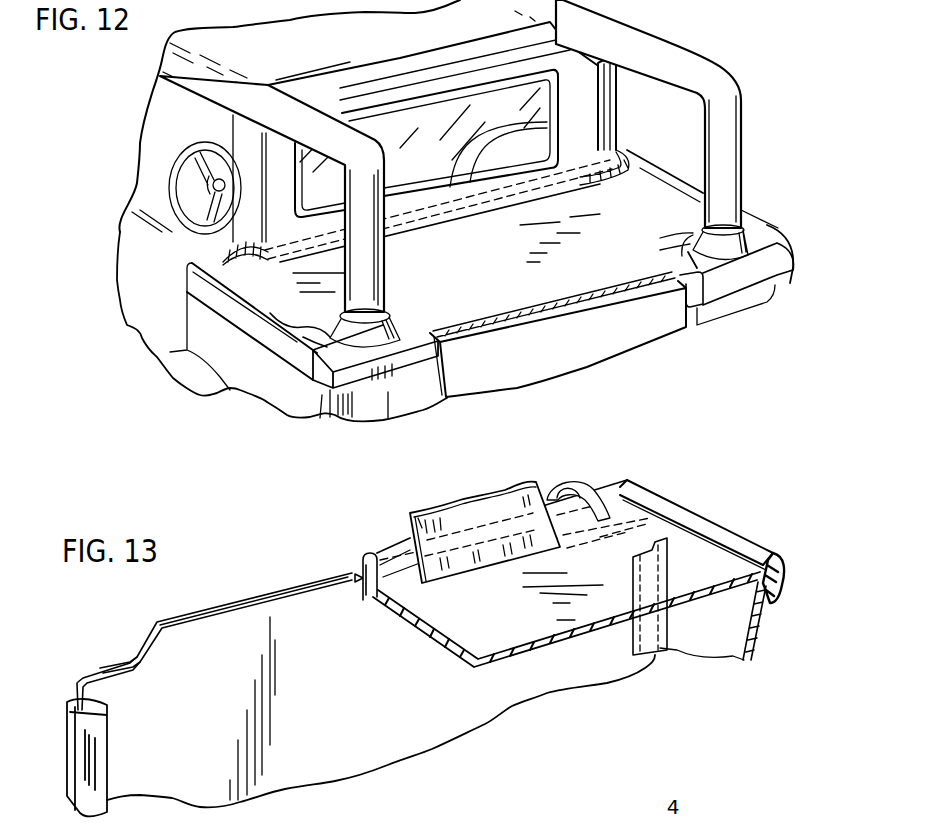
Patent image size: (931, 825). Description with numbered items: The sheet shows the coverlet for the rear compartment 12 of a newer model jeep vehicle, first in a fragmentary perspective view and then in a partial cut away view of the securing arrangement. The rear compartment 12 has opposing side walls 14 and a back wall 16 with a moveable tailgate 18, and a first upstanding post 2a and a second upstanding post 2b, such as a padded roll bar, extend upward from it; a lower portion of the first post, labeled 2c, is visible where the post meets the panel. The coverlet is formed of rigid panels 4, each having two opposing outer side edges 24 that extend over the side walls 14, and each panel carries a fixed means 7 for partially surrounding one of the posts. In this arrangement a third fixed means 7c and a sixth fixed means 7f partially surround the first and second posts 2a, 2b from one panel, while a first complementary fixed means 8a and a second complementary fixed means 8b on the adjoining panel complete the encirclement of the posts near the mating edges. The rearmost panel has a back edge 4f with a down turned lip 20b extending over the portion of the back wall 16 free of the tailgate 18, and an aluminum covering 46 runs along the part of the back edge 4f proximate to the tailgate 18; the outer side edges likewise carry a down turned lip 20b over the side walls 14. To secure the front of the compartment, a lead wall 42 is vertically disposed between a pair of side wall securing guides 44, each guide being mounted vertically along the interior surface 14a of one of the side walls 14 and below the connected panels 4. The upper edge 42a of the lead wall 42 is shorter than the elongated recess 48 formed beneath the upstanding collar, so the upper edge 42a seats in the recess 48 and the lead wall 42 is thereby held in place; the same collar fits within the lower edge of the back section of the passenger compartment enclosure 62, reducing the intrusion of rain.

In FIG. 12, the first upstanding post 2a is at (392, 266).
In FIG. 12, the second upstanding post 2b is at (744, 152).
In FIG. 12, the roll bar lower leg 2c is at (327, 396).
In FIG. 12, the rigid panels 4 is at (652, 183).
In FIG. 13, the rigid panels 4 is at (695, 555).
In FIG. 12, the back edge 4f is at (624, 268).
In FIG. 12, the fixed means 7 is at (753, 222).
In FIG. 12, the third fixed means 7c is at (293, 330).
In FIG. 12, the sixth fixed means 7f is at (700, 225).
In FIG. 12, the first complementary fixed means 8a is at (423, 304).
In FIG. 12, the second complementary fixed means 8b is at (780, 282).
In FIG. 13, the rear compartment 12 is at (722, 639).
In FIG. 12, the opposing side walls 14 is at (243, 350).
In FIG. 13, the opposing side walls 14 is at (755, 613).
In FIG. 13, the interior surface 14a is at (688, 634).
In FIG. 12, the back wall 16 is at (410, 408).
In FIG. 12, the moveable tailgate 18 is at (631, 335).
In FIG. 12, the down turned lip 20b is at (380, 400).
In FIG. 13, the down turned lip 20b is at (780, 556).
In FIG. 12, the opposing outer side edges 24 is at (633, 170).
In FIG. 13, the lead wall 42 is at (203, 630).
In FIG. 13, the upper edge 42a is at (278, 590).
In FIG. 13, the side wall securing guides 44 is at (108, 745).
In FIG. 12, the aluminum covering 46 is at (566, 297).
In FIG. 13, the elongated recess 48 is at (347, 580).
In FIG. 13, the passenger compartment enclosure 62 is at (543, 482).